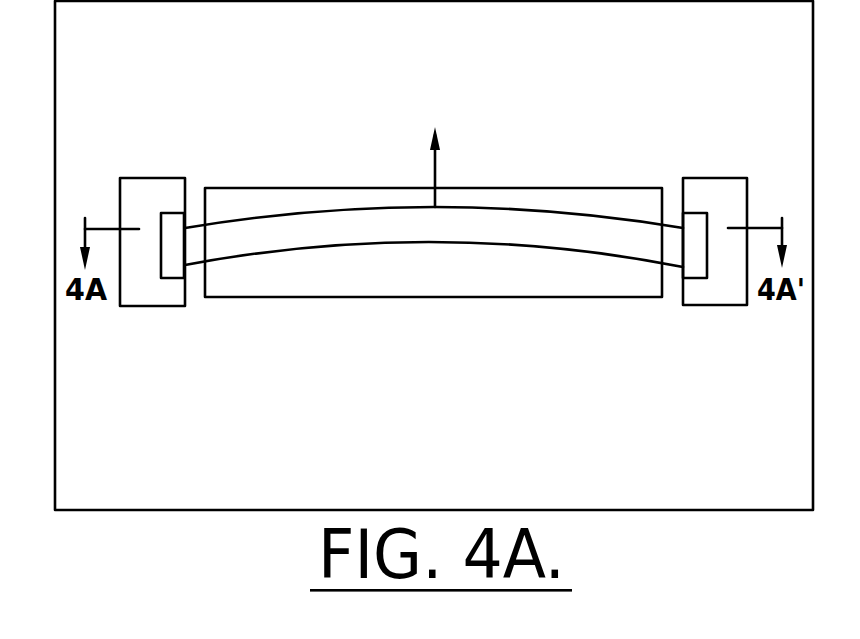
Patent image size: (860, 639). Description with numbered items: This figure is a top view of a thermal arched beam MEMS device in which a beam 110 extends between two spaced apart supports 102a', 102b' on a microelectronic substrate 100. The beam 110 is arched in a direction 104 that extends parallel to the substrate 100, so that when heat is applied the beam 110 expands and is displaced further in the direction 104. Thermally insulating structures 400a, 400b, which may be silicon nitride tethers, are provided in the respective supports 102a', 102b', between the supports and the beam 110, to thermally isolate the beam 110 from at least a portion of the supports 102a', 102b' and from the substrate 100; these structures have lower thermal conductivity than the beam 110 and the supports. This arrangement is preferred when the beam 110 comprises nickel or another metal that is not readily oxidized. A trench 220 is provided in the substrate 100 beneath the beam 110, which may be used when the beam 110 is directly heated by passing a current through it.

The microelectronic substrate 100 is at (434, 255).
The spaced apart support 102a' is at (121, 209).
The spaced apart support 102b' is at (679, 210).
The thermally insulating structure 400a is at (228, 202).
The thermally insulating structure 400b is at (641, 281).
The direction 104 is at (396, 166).
The beam 110 is at (434, 197).
The trench 220 is at (433, 242).